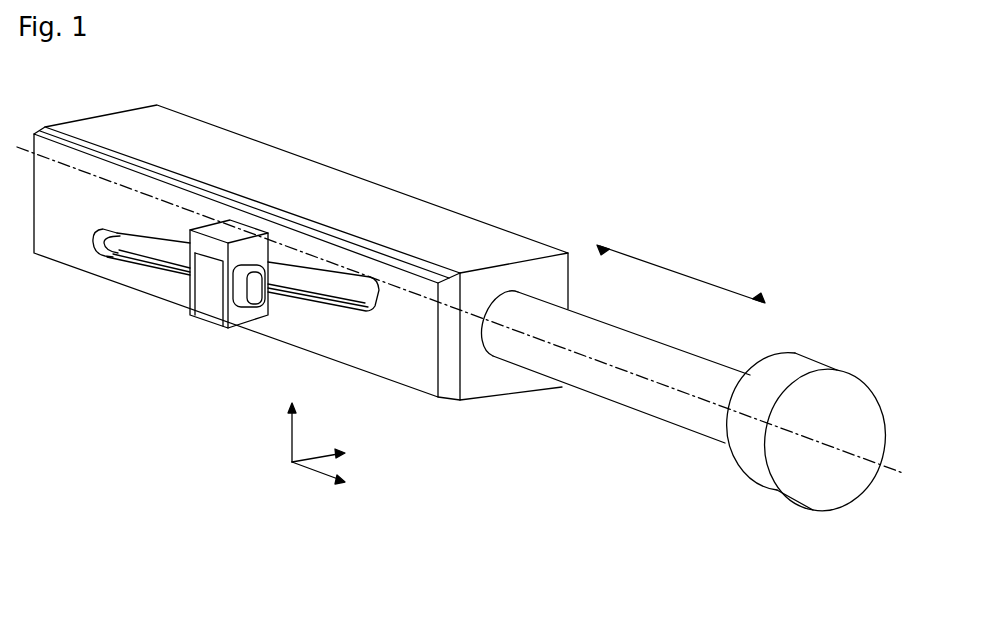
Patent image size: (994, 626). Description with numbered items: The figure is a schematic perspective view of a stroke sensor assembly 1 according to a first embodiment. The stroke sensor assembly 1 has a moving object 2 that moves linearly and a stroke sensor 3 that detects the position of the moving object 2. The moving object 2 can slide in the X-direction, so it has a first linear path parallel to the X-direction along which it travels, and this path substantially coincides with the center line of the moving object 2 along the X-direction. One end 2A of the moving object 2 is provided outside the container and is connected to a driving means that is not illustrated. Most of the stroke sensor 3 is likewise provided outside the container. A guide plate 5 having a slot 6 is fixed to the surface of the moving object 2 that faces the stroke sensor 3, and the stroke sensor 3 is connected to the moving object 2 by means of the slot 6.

The stroke sensor assembly 1 is at (477, 312).
The moving object 2 is at (227, 147).
The one end 2A is at (802, 365).
The stroke sensor 3 is at (208, 303).
The guide plate 5 is at (288, 318).
The slot 6 is at (152, 242).